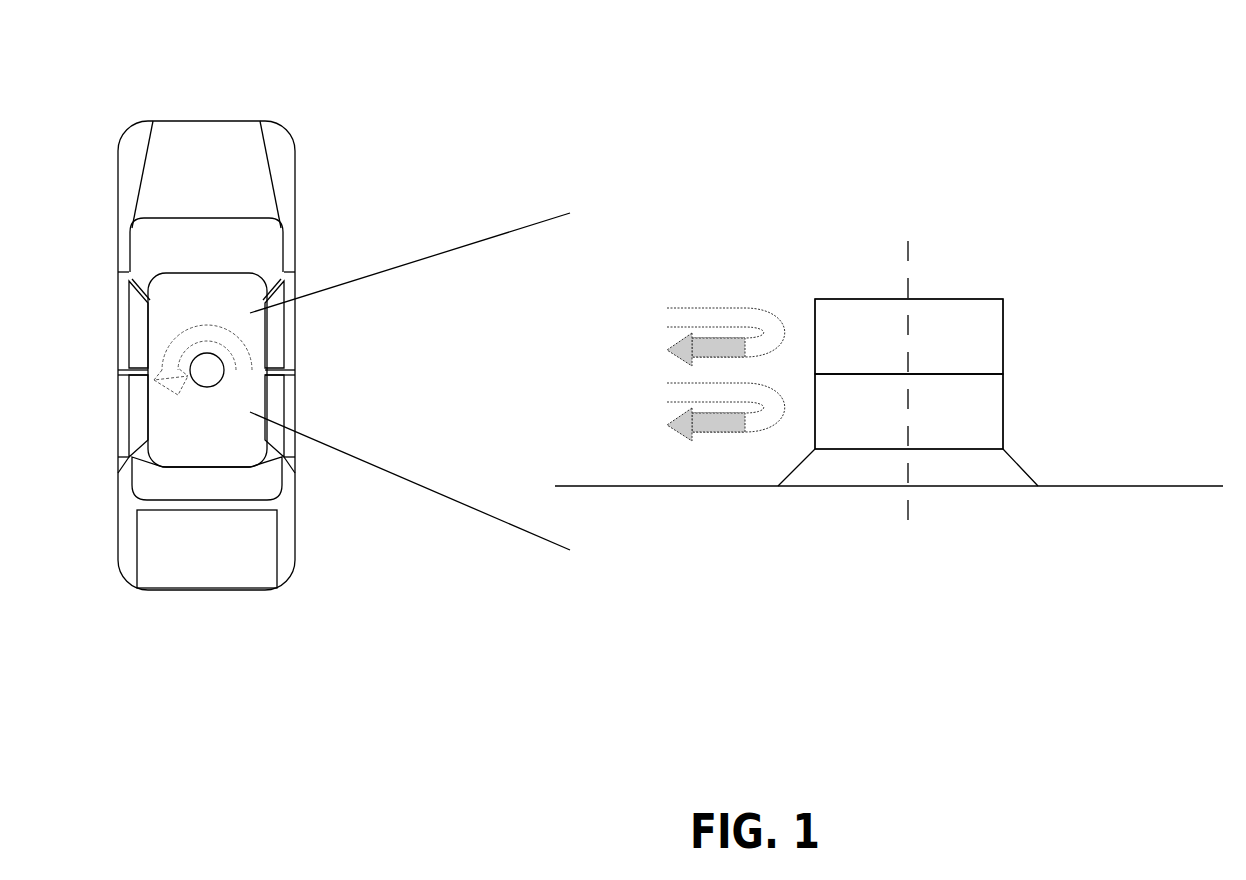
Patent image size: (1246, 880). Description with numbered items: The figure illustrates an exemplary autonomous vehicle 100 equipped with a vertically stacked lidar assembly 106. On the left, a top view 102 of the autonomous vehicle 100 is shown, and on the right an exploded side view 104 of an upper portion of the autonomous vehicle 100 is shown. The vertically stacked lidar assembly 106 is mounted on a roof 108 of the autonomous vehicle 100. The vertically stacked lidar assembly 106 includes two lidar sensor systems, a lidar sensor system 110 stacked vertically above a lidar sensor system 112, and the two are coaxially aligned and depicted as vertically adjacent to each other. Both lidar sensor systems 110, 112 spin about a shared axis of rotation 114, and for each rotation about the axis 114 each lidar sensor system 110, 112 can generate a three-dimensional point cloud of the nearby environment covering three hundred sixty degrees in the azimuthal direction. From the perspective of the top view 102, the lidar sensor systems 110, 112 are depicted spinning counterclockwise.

The autonomous vehicle 100 is at (230, 121).
The top view 102 is at (156, 76).
The exploded side view 104 is at (790, 218).
The vertically stacked lidar assembly 106 is at (224, 372).
The roof 108 is at (163, 337).
The lidar sensor system 110 is at (953, 348).
The lidar sensor system 112 is at (953, 423).
The axis of rotation 114 is at (908, 258).